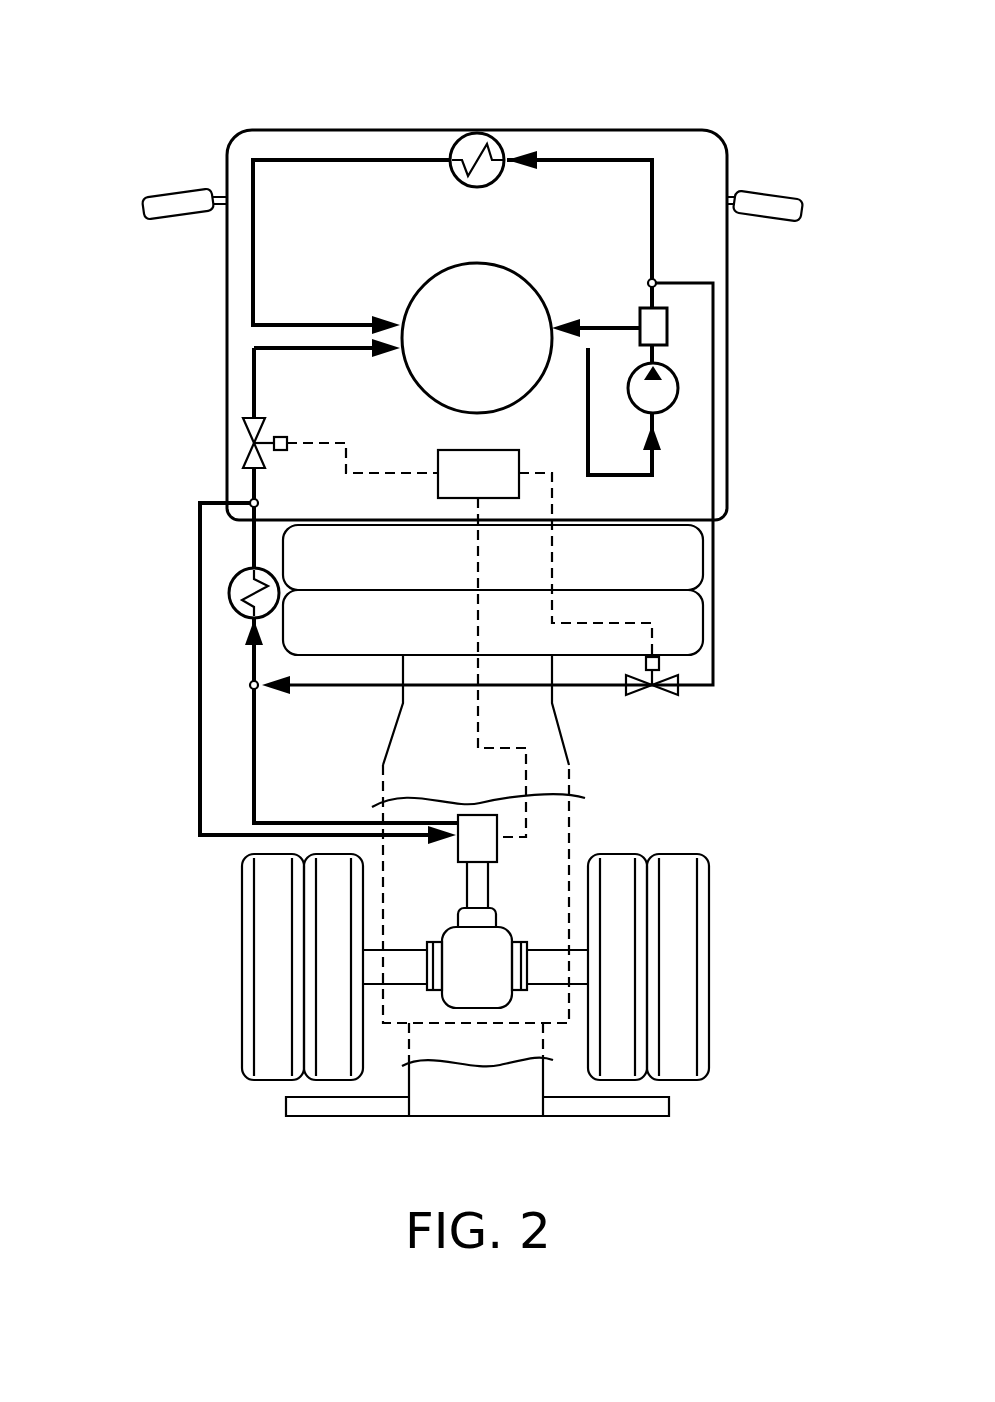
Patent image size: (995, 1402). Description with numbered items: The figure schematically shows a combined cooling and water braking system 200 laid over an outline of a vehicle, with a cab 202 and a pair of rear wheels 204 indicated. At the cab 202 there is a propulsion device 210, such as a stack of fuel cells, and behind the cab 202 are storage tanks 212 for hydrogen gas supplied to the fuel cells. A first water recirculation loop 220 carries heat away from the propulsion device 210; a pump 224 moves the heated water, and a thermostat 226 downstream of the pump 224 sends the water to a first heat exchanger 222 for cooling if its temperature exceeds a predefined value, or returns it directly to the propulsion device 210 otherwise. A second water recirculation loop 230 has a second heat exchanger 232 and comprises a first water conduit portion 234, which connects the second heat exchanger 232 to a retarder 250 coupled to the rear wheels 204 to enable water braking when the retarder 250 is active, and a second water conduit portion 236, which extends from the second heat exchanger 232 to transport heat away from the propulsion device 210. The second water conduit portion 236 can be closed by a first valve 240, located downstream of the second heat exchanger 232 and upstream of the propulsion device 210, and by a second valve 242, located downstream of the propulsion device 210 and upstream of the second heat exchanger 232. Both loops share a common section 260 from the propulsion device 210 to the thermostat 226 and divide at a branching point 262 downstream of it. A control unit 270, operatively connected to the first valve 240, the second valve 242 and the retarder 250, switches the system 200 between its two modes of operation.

The combined cooling and water braking system 200 is at (187, 77).
The cab 202 is at (418, 130).
The pair of rear wheels 204 is at (709, 967).
The propulsion device 210 is at (477, 338).
The storage tanks 212 is at (703, 560).
The first water recirculation loop 220 is at (652, 185).
The first heat exchanger 222 is at (477, 133).
The pump 224 is at (678, 388).
The thermostat 226 is at (667, 328).
The second water recirculation loop 230 is at (713, 435).
The second heat exchanger 232 is at (230, 593).
The first water conduit portion 234 is at (200, 532).
The second water conduit portion 236 is at (247, 485).
The first valve 240 is at (244, 443).
The second valve 242 is at (652, 700).
The retarder 250 is at (497, 850).
The common section 260 is at (590, 412).
The branching point 262 is at (656, 283).
The control unit 270 is at (480, 472).